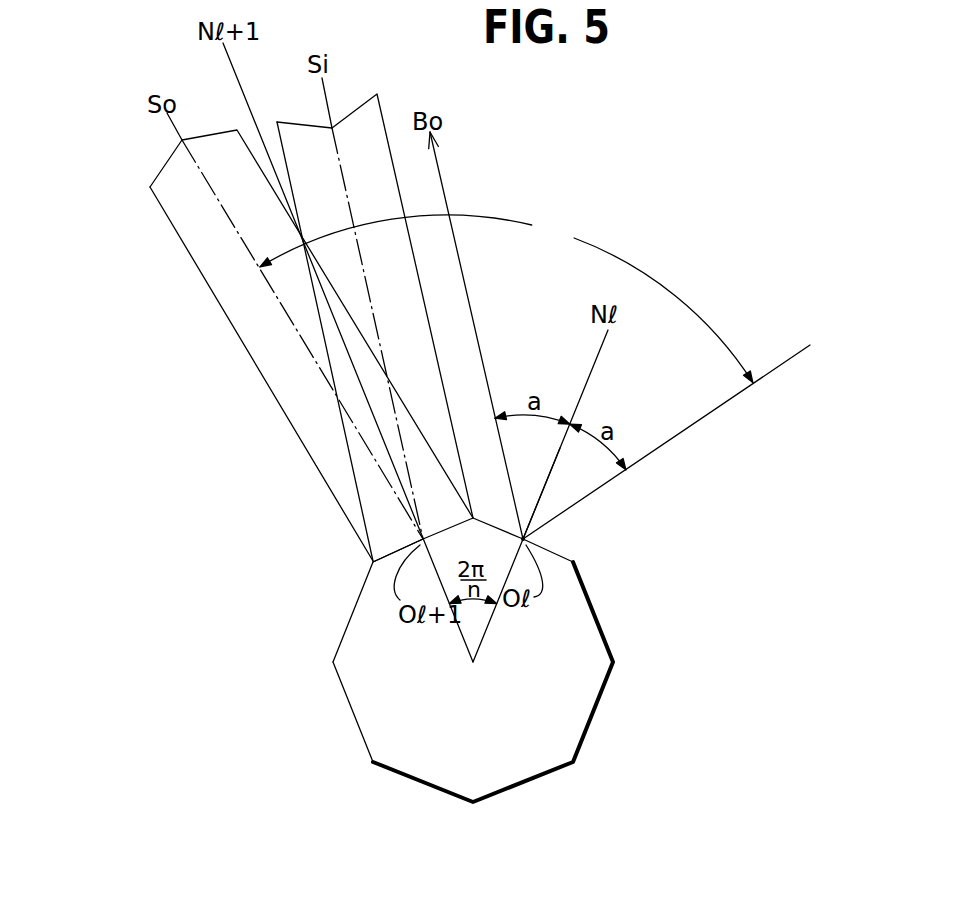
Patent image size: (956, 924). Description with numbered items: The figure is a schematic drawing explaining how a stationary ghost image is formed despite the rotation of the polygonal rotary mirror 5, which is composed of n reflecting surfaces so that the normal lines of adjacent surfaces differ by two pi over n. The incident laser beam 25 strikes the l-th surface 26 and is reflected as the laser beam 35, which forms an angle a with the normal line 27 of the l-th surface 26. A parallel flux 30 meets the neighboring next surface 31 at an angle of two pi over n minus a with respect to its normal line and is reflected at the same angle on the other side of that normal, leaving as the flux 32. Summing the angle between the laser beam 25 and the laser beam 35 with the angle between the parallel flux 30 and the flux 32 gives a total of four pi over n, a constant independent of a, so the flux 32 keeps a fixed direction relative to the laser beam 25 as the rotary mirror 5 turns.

The rotary mirror 5 is at (578, 683).
The incident laser beam 25 is at (700, 418).
The l-th surface 26 is at (534, 541).
The normal line Nl 27 is at (527, 508).
The parallel flux 30 is at (373, 108).
The (l+1)th surface 31 is at (402, 546).
The flux 32 is at (177, 200).
The laser beam 35 is at (445, 212).